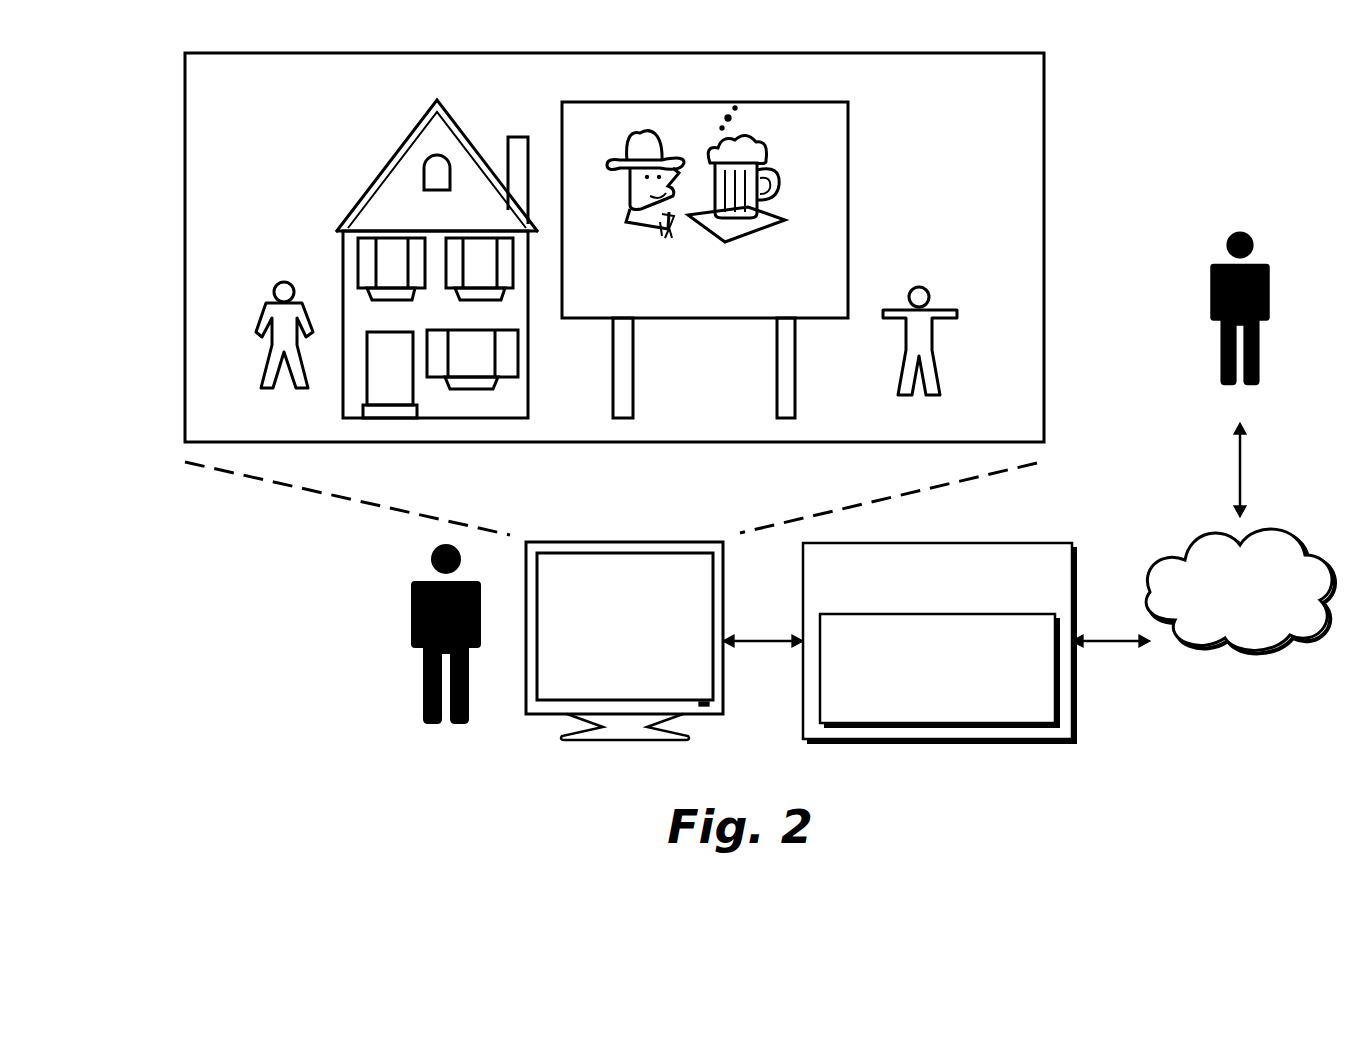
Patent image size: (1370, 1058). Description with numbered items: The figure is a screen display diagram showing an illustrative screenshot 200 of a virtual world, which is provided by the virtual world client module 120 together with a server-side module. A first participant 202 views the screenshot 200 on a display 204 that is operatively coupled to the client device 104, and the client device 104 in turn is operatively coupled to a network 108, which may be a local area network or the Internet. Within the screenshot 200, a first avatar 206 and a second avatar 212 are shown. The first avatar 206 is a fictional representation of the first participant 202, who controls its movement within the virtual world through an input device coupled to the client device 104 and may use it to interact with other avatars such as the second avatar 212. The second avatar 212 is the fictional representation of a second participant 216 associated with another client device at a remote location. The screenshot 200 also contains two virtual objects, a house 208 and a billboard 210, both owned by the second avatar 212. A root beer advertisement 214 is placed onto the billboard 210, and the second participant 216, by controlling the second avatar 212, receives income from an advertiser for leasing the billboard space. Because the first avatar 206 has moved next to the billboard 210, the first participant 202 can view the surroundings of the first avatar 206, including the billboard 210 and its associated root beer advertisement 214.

The screenshot 200 is at (613, 53).
The first participant 202 is at (446, 650).
The display 204 is at (643, 646).
The first avatar 206 is at (920, 356).
The house 208 is at (392, 158).
The billboard 210 is at (737, 245).
The second avatar 212 is at (284, 351).
The root beer advertisement 214 is at (823, 164).
The second participant 216 is at (1240, 322).
The client device 104 is at (1033, 597).
The network 108 is at (1254, 606).
The virtual world client module 120 is at (1040, 694).